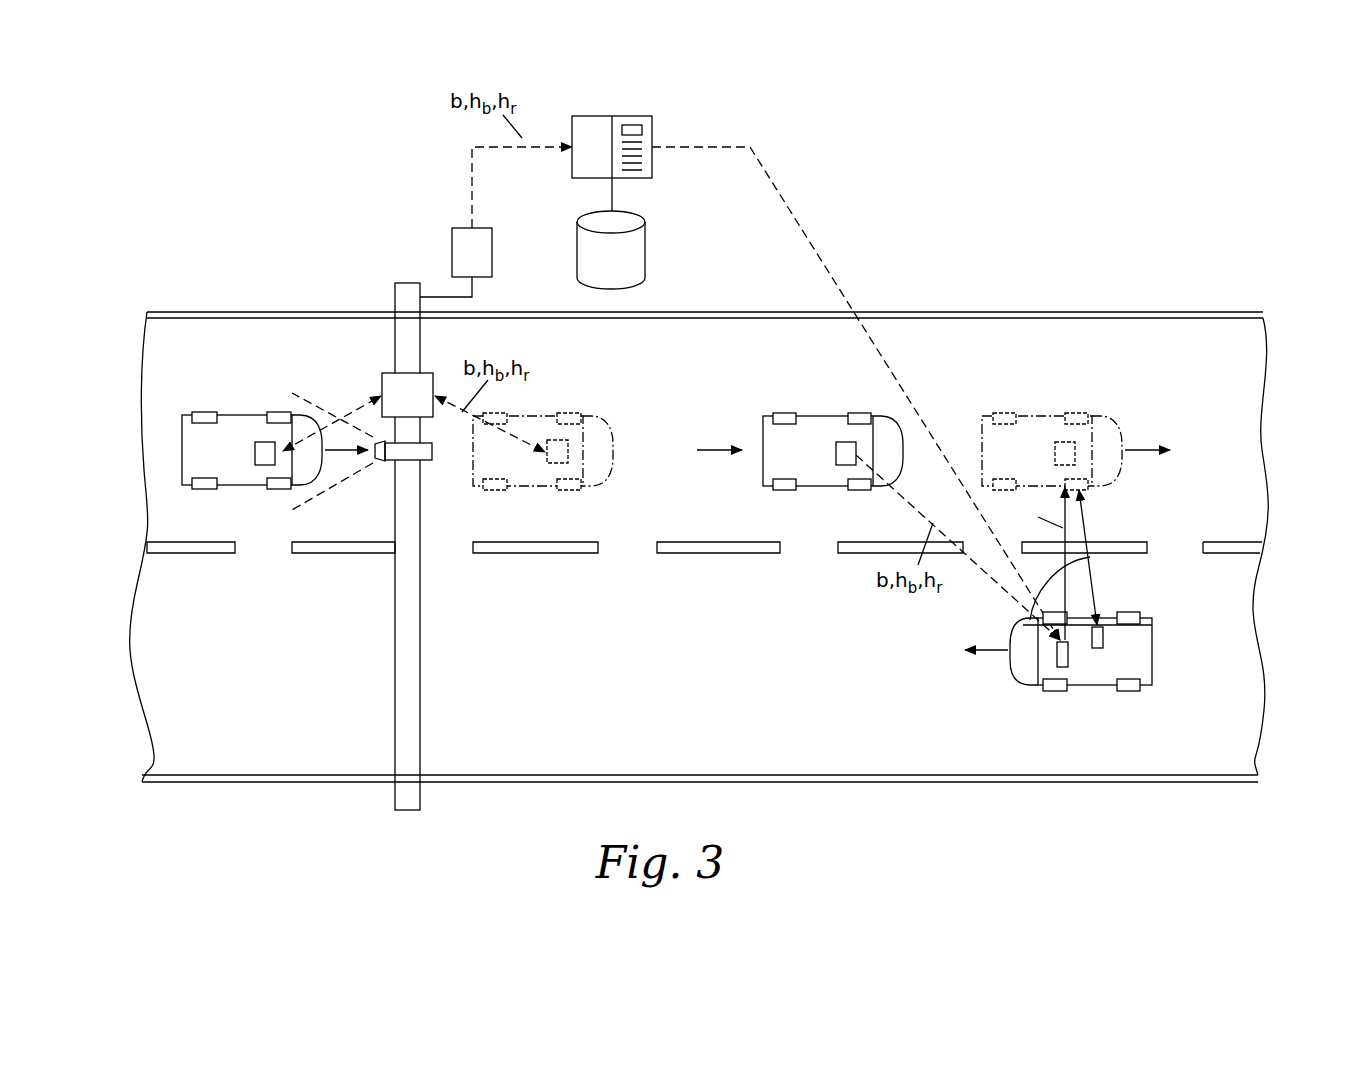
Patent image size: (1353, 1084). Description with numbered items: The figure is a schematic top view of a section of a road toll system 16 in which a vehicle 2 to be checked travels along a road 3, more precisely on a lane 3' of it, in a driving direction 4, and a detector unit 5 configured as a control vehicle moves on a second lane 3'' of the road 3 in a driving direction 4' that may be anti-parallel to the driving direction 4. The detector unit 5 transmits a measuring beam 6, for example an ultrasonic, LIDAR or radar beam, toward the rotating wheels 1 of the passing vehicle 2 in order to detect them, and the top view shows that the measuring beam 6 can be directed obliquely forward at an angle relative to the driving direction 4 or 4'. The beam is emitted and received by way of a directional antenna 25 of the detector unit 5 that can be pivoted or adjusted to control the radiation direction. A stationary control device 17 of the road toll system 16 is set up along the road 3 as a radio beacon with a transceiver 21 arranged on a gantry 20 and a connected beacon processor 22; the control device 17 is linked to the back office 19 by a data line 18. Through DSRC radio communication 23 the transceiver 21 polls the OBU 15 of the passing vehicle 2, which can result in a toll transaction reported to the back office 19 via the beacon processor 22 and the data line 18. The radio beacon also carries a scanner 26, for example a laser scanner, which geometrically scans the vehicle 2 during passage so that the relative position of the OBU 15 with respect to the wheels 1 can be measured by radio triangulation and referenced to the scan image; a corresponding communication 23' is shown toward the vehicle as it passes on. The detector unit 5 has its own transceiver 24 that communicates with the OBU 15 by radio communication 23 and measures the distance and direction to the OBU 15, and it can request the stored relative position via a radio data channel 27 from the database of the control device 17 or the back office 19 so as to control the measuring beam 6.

The wheel 1 is at (628, 437).
The vehicle 2 is at (225, 412).
The road 3 is at (699, 586).
The lane 3' is at (1273, 318).
The second lane 3'' is at (1274, 609).
The driving direction 4 is at (747, 460).
The driving direction 4' is at (986, 681).
The detector unit 5 is at (1122, 679).
The measuring beam 6 is at (1092, 575).
The OBU 15 is at (258, 460).
The road toll system 16 is at (707, 110).
The control device 17 is at (303, 242).
The data line 18 is at (470, 165).
The back office 19 is at (652, 178).
The gantry 20 is at (410, 638).
The transceiver 21 is at (380, 373).
The beacon processor 22 is at (451, 250).
The DSRC radio communication 23 is at (332, 396).
The communication link 23' is at (531, 405).
The transceiver 24 is at (1068, 655).
The directional antenna 25 is at (1103, 637).
The scanner 26 is at (413, 460).
The radio data channel 27 is at (808, 238).